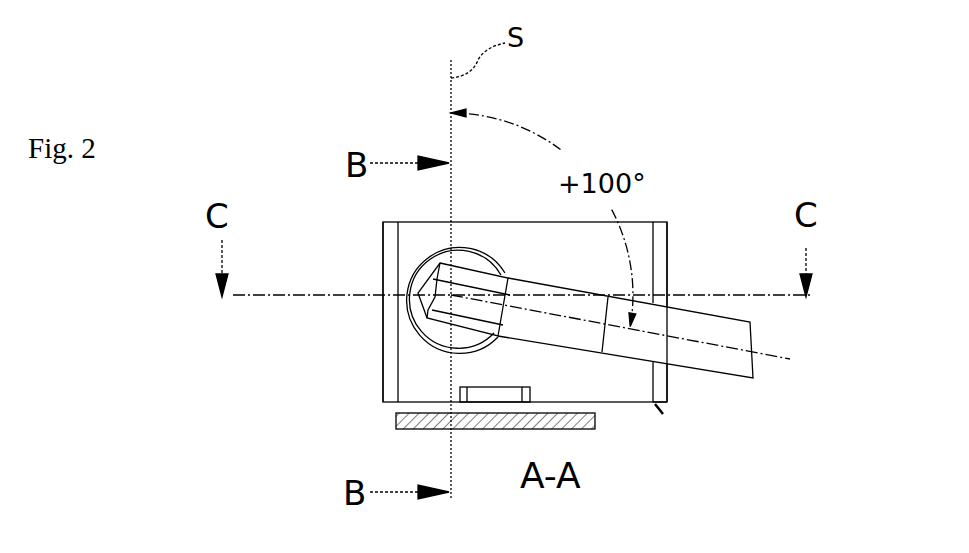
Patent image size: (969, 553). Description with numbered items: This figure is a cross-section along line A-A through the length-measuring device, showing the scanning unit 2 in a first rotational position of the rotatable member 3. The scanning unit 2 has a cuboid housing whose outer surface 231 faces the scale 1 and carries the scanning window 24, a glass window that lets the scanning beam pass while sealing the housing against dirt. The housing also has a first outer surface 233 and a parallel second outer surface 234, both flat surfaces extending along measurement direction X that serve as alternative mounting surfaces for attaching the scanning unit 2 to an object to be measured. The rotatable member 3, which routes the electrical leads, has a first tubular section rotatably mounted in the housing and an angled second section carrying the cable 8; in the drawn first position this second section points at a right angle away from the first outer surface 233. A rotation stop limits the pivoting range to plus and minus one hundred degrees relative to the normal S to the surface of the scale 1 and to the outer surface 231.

The scale 1 is at (577, 422).
The scanning unit 2 is at (600, 249).
The rotatable member 3 is at (425, 275).
The cable 8 is at (740, 339).
The scanning window 24 is at (460, 393).
The outer surface 231 is at (739, 464).
The first outer surface 233 is at (750, 274).
The second outer surface 234 is at (370, 363).